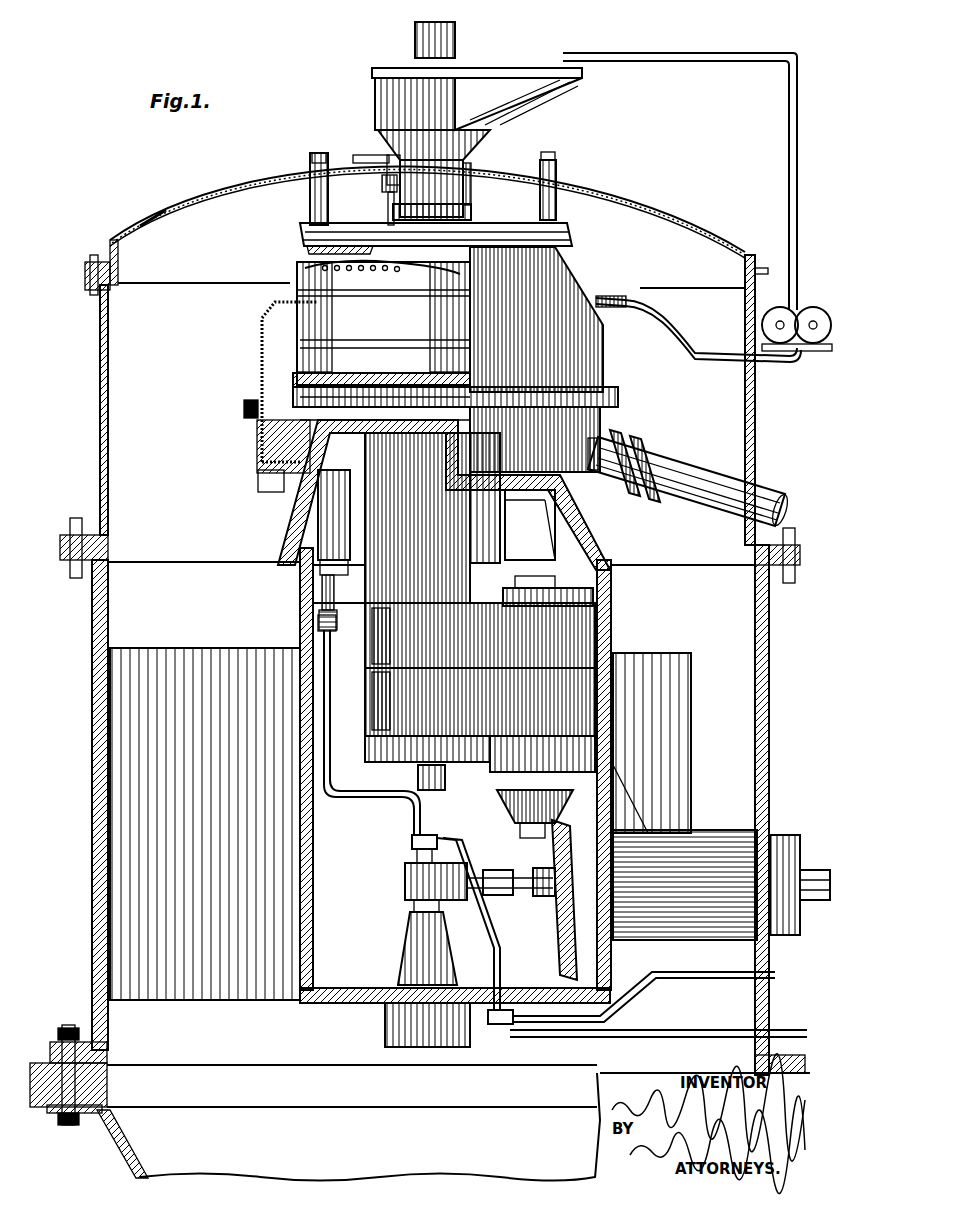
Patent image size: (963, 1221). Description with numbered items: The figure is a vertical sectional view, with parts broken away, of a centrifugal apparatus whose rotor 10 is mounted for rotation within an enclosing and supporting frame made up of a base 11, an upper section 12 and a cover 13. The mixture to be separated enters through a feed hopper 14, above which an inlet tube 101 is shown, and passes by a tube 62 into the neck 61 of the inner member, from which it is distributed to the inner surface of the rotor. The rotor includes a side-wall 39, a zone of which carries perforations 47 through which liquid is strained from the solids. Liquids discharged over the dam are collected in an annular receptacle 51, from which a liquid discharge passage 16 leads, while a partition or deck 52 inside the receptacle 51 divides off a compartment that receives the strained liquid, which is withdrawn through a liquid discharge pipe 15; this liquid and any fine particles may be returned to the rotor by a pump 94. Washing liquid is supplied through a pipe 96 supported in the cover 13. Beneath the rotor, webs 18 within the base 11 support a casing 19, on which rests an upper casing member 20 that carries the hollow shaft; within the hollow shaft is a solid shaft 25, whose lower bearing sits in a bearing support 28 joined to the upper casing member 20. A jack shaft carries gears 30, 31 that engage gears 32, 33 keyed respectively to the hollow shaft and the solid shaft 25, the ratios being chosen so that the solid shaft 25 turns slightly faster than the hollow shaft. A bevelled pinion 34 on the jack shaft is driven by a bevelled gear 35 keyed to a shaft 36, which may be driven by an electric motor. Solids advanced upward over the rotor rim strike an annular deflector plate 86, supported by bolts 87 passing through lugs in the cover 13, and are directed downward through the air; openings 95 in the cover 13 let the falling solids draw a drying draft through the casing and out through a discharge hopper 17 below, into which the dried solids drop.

The rotor 10 is at (306, 337).
The base 11 is at (92, 777).
The upper section 12 is at (100, 440).
The cover 13 is at (190, 197).
The feed hopper 14 is at (518, 108).
The liquid discharge pipe 15 is at (603, 298).
The liquid discharge passage 16 is at (780, 505).
The hopper 17 is at (458, 1123).
The webs 18 is at (400, 824).
The casing 19 is at (611, 682).
The upper casing member 20 is at (588, 518).
The solid shaft 25 is at (436, 790).
The bearing support 28 is at (593, 600).
The gear 30 is at (597, 632).
The gear 31 is at (595, 714).
The gear 32 is at (378, 651).
The gear 33 is at (380, 703).
The bevelled pinion 34 is at (500, 800).
The bevelled gear 35 is at (553, 938).
The shaft 36 is at (815, 868).
The side-wall 39 is at (381, 324).
The perforations 47 is at (320, 268).
The annular receptacle 51 is at (603, 357).
The partition or deck 52 is at (285, 305).
The neck 61 is at (471, 214).
The tube 62 is at (470, 180).
The annular deflector plate 86 is at (436, 203).
The bolts 87 is at (556, 163).
The pump 94 is at (815, 352).
The openings 95 is at (158, 220).
The pipe 96 is at (385, 205).
The tube 101 is at (462, 40).